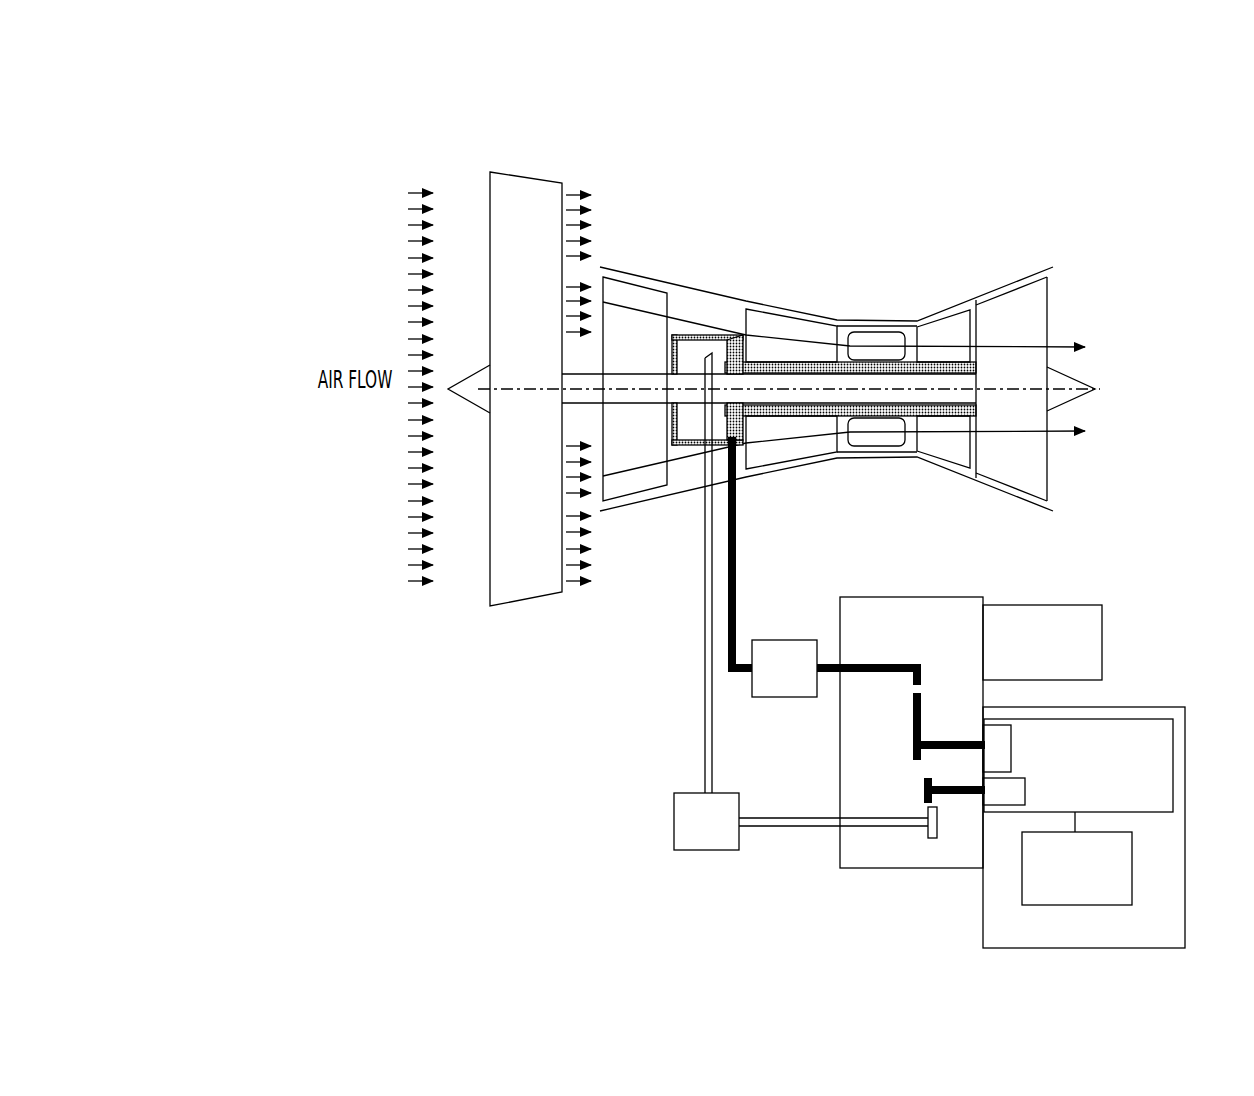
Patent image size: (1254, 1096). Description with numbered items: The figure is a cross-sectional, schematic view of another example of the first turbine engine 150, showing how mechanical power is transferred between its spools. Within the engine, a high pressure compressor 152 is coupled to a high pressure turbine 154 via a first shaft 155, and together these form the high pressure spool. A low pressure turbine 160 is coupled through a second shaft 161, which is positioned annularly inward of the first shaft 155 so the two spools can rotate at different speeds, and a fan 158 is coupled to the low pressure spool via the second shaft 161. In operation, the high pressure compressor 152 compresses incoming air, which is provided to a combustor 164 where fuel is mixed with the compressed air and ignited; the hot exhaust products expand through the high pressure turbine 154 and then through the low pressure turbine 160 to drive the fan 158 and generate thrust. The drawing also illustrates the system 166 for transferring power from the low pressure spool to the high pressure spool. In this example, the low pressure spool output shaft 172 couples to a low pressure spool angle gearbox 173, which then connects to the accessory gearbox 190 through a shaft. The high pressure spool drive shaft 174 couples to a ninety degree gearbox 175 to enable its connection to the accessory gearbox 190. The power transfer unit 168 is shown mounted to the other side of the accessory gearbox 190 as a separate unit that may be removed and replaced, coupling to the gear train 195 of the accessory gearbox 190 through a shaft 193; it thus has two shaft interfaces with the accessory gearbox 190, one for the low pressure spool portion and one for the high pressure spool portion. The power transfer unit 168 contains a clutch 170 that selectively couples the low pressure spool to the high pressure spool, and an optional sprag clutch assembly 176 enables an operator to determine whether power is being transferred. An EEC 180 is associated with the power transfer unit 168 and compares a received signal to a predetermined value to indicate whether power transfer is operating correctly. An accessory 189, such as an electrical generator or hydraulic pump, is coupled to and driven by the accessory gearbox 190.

The first turbine engine 150 is at (434, 97).
The fan 158 is at (529, 171).
The high pressure compressor 152 is at (784, 314).
The high pressure turbine 154 is at (946, 336).
The first shaft 155 is at (940, 358).
The second shaft 161 is at (931, 389).
The low pressure turbine 160 is at (1009, 468).
The combustor 164 is at (877, 460).
The low pressure spool output shaft 172 is at (705, 600).
The high pressure spool drive shaft 174 is at (737, 586).
The 90° gearbox 175 is at (771, 681).
The low pressure spool angle gearbox 173 is at (693, 833).
The accessory gearbox 190 is at (897, 634).
The shaft 193 is at (942, 742).
The gear train 195 is at (906, 736).
The sprag clutch assembly 176 is at (1003, 744).
The clutch 170 is at (995, 792).
The power transfer unit 168 is at (1166, 791).
The EEC 180 is at (1132, 861).
The system 166 is at (1185, 912).
The accessory 189 is at (1042, 642).